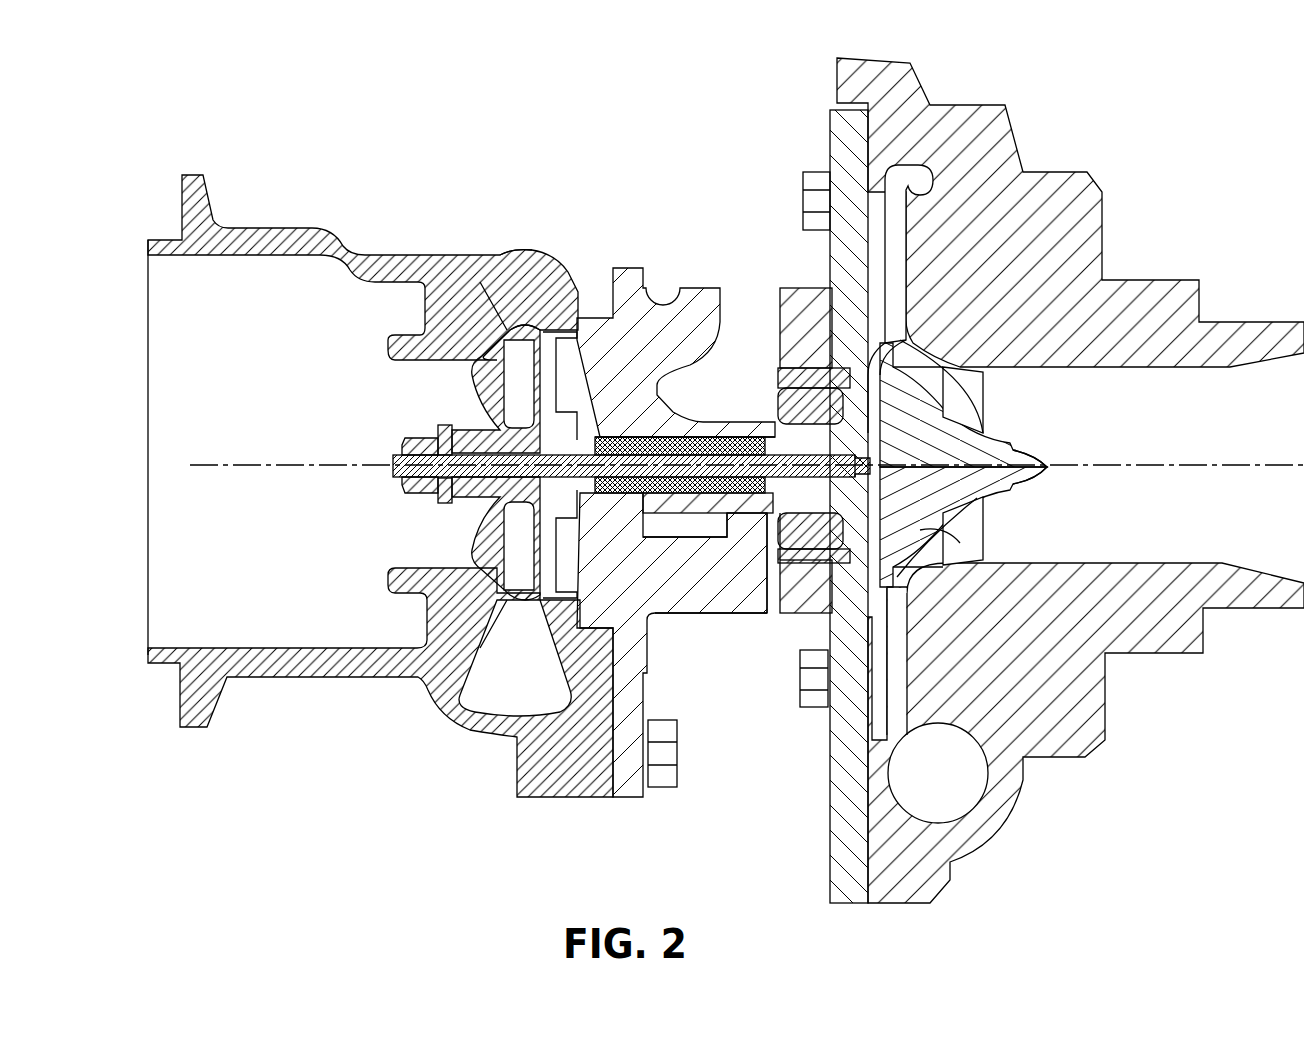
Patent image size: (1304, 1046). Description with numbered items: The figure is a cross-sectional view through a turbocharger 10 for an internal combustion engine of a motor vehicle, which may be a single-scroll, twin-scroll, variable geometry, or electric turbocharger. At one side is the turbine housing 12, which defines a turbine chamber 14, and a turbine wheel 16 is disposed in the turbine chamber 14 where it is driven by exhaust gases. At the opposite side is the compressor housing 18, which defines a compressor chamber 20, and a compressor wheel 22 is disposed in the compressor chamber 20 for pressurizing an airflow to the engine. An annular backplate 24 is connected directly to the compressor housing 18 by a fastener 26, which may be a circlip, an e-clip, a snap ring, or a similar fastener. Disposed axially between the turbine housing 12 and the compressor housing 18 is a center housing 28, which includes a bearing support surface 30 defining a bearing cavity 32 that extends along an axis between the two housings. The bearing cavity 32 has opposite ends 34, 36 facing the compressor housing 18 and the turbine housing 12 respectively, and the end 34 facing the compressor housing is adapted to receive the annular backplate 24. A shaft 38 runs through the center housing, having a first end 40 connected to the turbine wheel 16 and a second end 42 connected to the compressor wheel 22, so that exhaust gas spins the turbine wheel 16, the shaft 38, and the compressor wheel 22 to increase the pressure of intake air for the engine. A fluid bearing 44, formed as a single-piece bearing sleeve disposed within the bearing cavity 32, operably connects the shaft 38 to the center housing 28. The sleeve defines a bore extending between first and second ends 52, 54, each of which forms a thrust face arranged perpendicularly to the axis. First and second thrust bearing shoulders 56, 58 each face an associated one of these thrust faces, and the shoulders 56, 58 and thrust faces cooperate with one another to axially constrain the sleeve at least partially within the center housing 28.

The turbocharger 10 is at (150, 108).
The turbine housing 12 is at (181, 212).
The turbine chamber 14 is at (442, 411).
The turbine wheel 16 is at (490, 362).
The compressor housing 18 is at (1110, 226).
The compressor chamber 20 is at (1052, 408).
The compressor wheel 22 is at (957, 537).
The annular backplate 24 is at (775, 366).
The fastener 26 is at (850, 345).
The center housing 28 is at (608, 265).
The bearing support surface 30 is at (652, 503).
The bearing cavity 32 is at (723, 503).
The end of bearing cavity 34 is at (775, 505).
The end of bearing cavity 36 is at (500, 520).
The shaft 38 is at (400, 455).
The first end of shaft 40 is at (440, 430).
The second end of shaft 42 is at (1000, 488).
The fluid bearing 44 is at (600, 430).
The first end of sleeve 52 is at (440, 500).
The second end of sleeve 54 is at (777, 430).
The first thrust bearing shoulder 56 is at (521, 330).
The second thrust bearing shoulder 58 is at (773, 430).